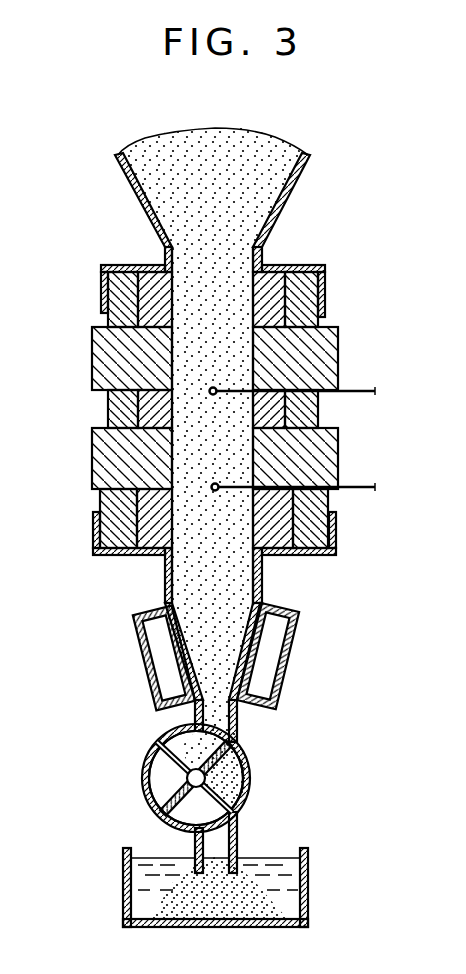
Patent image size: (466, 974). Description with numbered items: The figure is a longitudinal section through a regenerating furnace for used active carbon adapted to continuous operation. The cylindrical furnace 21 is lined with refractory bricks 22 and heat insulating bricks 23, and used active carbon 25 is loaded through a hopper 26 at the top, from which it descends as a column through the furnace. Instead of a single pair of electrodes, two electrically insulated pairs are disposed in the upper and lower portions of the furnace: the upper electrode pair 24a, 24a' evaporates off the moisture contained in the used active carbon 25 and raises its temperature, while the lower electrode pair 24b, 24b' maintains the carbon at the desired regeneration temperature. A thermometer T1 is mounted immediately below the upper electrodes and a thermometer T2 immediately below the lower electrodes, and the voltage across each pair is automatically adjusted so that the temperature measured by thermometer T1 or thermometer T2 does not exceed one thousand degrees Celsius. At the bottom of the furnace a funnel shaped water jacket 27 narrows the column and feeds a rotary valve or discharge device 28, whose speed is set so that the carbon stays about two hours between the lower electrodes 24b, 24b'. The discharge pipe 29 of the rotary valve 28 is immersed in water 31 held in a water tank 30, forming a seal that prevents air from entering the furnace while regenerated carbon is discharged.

The cylindrical furnace 21 is at (100, 290).
The refractory bricks 22 is at (280, 276).
The heat insulating bricks 23 is at (322, 318).
The upper electrode 24a is at (334, 358).
The upper electrode 24a' is at (104, 358).
The lower electrode 24b is at (335, 458).
The lower electrode 24b' is at (104, 458).
The used active carbon 25 is at (268, 157).
The hopper 26 is at (131, 186).
The funnel shaped water jacket 27 is at (298, 640).
The rotary valve or discharge device 28 is at (180, 768).
The discharge pipe 29 is at (240, 823).
The water tank 30 is at (309, 862).
The water 31 is at (152, 862).
The thermometer T1 is at (368, 393).
The thermometer T2 is at (370, 490).